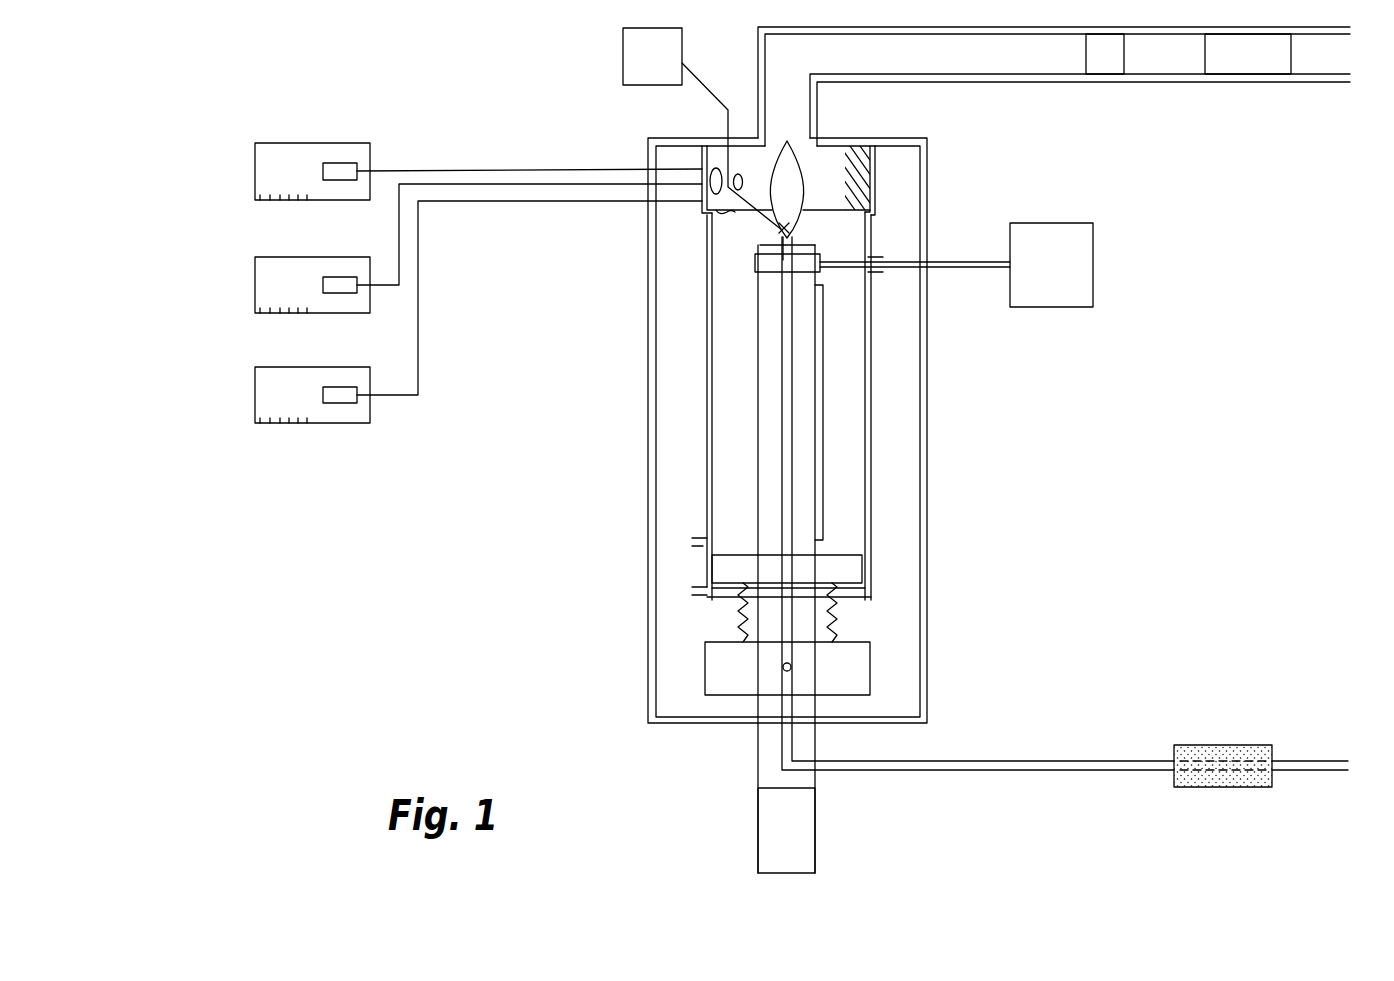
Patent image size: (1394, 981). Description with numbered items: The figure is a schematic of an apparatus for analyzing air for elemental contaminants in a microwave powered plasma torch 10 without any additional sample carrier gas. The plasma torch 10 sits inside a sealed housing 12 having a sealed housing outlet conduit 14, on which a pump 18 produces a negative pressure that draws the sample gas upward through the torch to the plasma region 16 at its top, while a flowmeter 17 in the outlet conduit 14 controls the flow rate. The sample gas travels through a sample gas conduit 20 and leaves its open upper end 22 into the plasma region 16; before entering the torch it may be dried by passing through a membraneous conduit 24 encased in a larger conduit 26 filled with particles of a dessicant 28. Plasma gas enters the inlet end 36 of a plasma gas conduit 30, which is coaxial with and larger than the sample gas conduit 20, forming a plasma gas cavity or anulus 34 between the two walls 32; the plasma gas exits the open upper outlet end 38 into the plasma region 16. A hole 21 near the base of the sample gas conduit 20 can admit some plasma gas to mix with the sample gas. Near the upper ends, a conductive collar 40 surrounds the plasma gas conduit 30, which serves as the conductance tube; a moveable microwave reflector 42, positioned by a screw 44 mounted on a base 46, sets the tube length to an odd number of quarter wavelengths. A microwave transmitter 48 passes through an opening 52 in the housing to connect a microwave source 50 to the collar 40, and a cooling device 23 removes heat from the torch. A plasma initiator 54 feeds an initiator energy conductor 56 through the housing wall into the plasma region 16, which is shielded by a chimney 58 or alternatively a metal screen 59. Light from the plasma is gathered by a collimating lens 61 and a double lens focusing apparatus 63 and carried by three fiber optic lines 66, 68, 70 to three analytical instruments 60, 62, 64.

The plasma torch 10 is at (722, 391).
The sealed housing 12 is at (647, 408).
The sealed housing outlet conduit 14 is at (1048, 85).
The plasma region 16 is at (805, 195).
The flowmeter 17 is at (1117, 67).
The pump 18 is at (1236, 67).
The sample gas conduit 20 is at (793, 405).
The hole 21 is at (792, 670).
The open upper end 22 is at (806, 246).
The cooling device 23 is at (823, 366).
The membraneous conduit 24 is at (1192, 752).
The larger conduit 26 is at (1218, 789).
The dessicant 28 is at (1213, 770).
The plasma gas conduit 30 is at (760, 480).
The inner wall 32 is at (706, 432).
The plasma gas cavity or anulus 34 is at (772, 437).
The inlet end 36 is at (778, 762).
The open upper outlet end 38 is at (760, 246).
The collar 40 is at (756, 265).
The moveable microwave reflector 42 is at (824, 581).
The screw 44 is at (838, 620).
The base 46 is at (824, 681).
The microwave transmitter 48 is at (830, 273).
The microwave source 50 is at (1064, 275).
The opening 52 is at (875, 273).
The plasma initiator 54 is at (652, 56).
The initiator energy conductor 56 is at (708, 80).
The chimney 58 is at (877, 192).
The metal screen 59 is at (862, 176).
The analytical instrument 60 is at (301, 142).
The collimating lens 61 is at (713, 168).
The analytical instrument 62 is at (298, 256).
The double lens focusing apparatus 63 is at (712, 214).
The analytical instrument 64 is at (298, 366).
The fiber optic line 66 is at (497, 167).
The fiber optic line 68 is at (397, 237).
The fiber optic line 70 is at (420, 302).